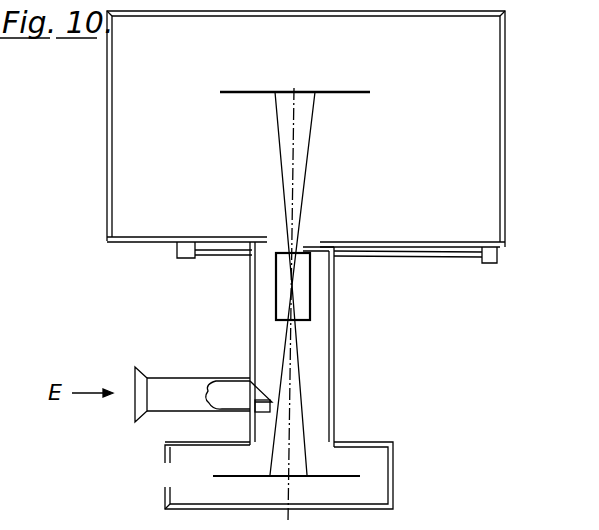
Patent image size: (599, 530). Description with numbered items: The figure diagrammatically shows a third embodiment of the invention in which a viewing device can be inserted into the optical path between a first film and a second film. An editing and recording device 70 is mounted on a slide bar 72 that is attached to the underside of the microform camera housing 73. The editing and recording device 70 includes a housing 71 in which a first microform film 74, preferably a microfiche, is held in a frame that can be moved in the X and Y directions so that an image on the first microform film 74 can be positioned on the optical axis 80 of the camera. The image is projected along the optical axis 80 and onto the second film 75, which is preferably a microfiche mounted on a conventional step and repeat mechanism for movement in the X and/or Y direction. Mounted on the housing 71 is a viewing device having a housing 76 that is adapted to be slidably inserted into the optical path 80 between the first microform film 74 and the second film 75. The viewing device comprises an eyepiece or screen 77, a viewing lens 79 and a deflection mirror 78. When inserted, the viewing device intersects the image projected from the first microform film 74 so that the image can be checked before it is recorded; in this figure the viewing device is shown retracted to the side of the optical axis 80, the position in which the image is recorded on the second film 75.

The editing and recording device 70 is at (334, 345).
The housing 71 is at (335, 394).
The slide bar 72 is at (448, 262).
The microform camera housing 73 is at (506, 200).
The first microform film 74 is at (356, 475).
The second film 75 is at (345, 92).
The viewing device housing 76 is at (178, 378).
The eyepiece or screen 77 is at (135, 376).
The deflection mirror 78 is at (271, 379).
The viewing lens 79 is at (260, 413).
The optical axis 80 is at (296, 173).